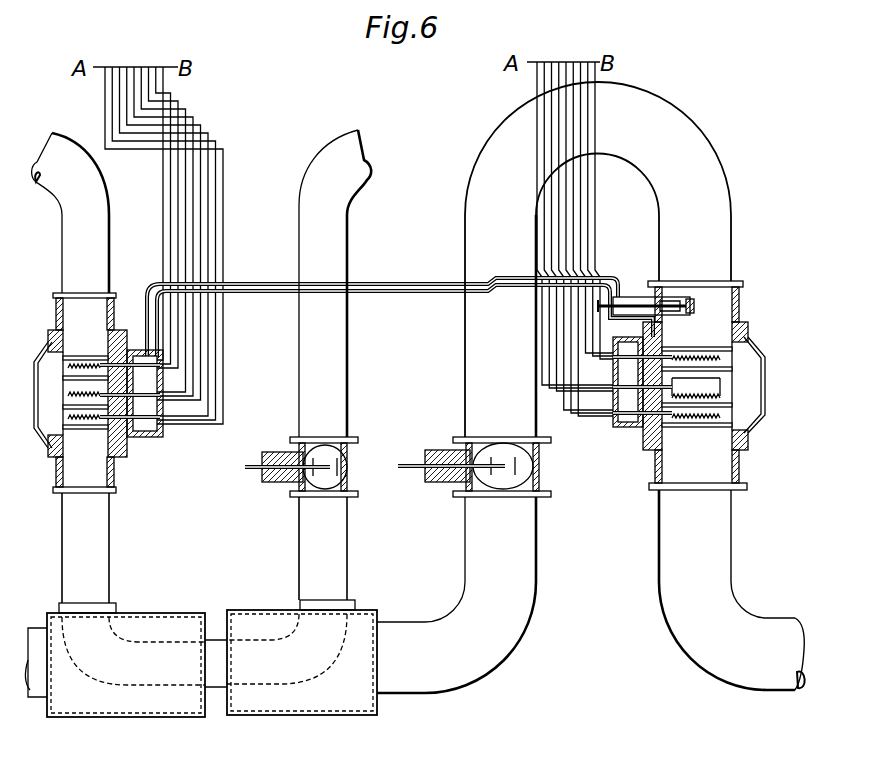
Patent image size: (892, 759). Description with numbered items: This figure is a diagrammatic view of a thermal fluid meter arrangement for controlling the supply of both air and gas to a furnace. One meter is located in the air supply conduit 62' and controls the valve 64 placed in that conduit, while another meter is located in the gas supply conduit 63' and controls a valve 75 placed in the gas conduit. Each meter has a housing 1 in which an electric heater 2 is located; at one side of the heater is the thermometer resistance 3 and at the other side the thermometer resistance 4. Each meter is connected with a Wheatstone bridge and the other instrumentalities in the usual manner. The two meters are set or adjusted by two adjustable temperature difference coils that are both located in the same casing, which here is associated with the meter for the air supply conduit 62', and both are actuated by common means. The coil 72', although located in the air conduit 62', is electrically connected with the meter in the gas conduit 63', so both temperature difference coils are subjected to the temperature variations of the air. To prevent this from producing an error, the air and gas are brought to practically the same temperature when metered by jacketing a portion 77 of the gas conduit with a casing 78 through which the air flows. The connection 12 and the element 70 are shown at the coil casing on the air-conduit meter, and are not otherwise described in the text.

The housing 1 is at (56, 312).
The electric heater 2 is at (75, 393).
The thermometer resistance 3 is at (93, 426).
The thermometer resistance 4 is at (85, 366).
The rod connection 12 is at (689, 314).
The tube end 70 is at (673, 297).
The coil 72' is at (705, 284).
The valve 75 is at (330, 449).
The valve 64 is at (541, 453).
The gas supply conduit 63' is at (95, 373).
The air supply conduit 62' is at (591, 387).
The portion of the gas conduit 77 is at (160, 640).
The casing 78 is at (163, 716).